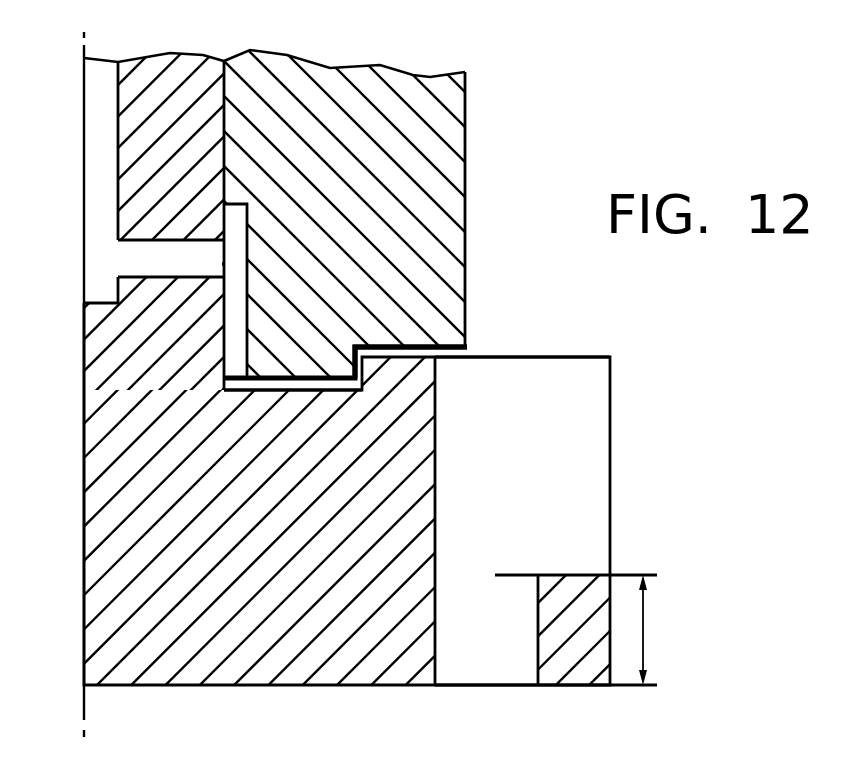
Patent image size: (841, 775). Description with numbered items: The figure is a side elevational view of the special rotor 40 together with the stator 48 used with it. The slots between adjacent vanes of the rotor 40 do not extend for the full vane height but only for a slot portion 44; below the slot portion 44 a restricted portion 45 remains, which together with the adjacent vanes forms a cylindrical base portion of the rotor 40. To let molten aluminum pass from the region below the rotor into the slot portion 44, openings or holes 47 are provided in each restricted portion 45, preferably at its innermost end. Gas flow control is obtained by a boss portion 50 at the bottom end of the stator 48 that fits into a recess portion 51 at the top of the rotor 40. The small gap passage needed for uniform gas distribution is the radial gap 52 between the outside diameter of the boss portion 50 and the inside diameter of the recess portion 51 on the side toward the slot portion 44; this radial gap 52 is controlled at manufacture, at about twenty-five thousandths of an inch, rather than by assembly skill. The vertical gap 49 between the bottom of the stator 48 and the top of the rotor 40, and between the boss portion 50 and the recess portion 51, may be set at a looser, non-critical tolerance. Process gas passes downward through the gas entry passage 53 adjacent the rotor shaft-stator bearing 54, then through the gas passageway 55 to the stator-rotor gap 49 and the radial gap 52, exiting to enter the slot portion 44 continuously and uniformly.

The rotor 40 is at (253, 690).
The slot portion 44 is at (610, 440).
The restricted portion 45 is at (643, 630).
The openings or holes 47 is at (483, 681).
The stator 48 is at (465, 153).
The gap 49 is at (462, 352).
The boss portion 50 is at (293, 373).
The recess portion 51 is at (267, 397).
The radial gap 52 is at (365, 371).
The gas entry passage 53 is at (103, 73).
The rotor shaft-stator bearing 54 is at (234, 79).
The gas passageway 55 is at (135, 251).